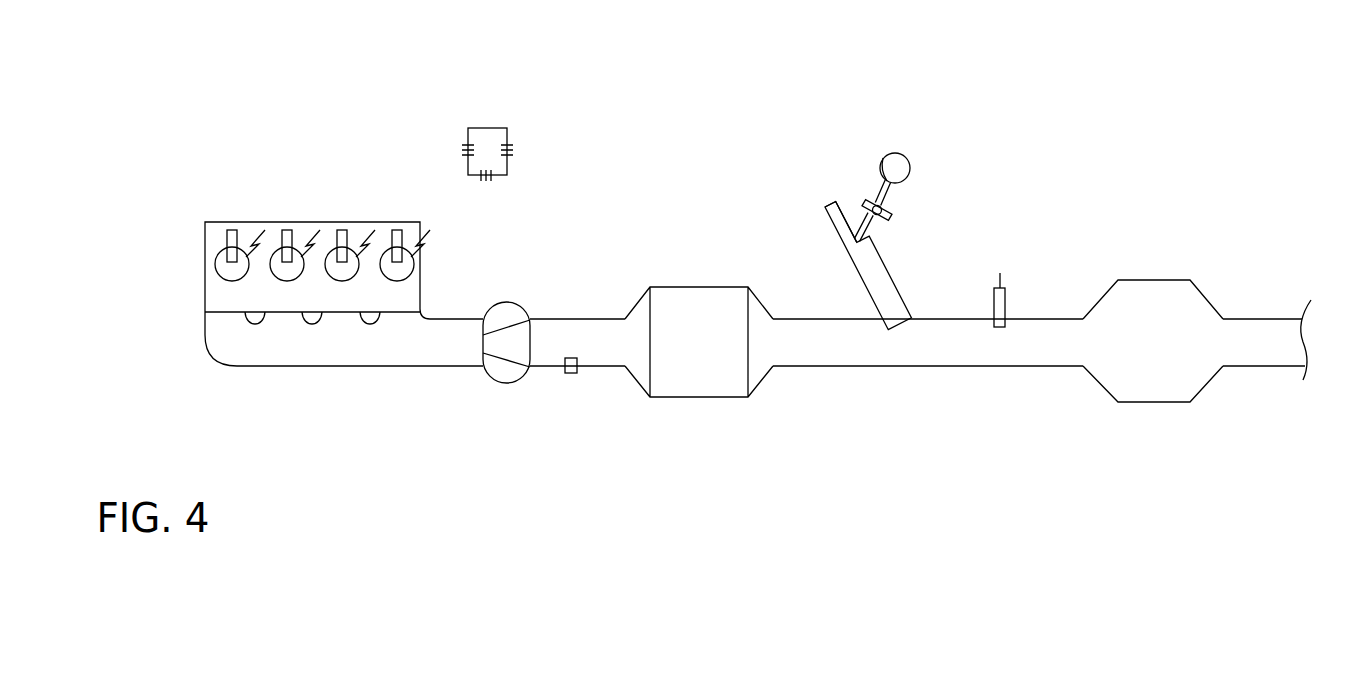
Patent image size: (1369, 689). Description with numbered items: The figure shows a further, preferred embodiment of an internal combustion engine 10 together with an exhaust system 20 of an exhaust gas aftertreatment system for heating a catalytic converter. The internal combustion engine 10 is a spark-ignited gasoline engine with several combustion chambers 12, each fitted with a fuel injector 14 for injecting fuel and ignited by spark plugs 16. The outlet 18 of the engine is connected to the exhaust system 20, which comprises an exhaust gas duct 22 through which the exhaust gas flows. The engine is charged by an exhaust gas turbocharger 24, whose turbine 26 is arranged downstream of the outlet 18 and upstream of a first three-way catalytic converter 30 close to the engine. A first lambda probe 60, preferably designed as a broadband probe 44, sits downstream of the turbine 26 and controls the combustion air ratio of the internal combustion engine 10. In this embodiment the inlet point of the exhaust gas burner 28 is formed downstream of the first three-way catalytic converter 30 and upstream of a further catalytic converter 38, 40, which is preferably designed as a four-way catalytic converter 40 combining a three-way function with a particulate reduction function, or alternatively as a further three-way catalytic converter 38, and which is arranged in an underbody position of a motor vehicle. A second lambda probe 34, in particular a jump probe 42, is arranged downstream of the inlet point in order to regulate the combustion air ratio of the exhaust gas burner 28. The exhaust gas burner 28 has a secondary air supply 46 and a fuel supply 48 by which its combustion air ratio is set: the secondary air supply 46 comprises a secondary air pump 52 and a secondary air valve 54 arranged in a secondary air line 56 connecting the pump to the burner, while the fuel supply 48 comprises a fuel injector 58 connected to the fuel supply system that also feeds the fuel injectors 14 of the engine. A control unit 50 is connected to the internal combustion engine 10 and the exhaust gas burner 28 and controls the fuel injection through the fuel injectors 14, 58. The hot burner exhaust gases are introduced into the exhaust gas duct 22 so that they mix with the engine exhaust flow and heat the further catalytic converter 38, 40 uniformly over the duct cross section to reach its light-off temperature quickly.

The internal combustion engine 10 is at (190, 193).
The combustion chamber 12 is at (225, 269).
The fuel injector 14 is at (280, 229).
The spark plug 16 is at (311, 240).
The outlet 18 is at (278, 345).
The exhaust system 20 is at (1093, 160).
The exhaust gas duct 22 is at (452, 329).
The exhaust gas turbocharger 24 is at (509, 299).
The turbine 26 is at (507, 383).
The exhaust gas burner 28 is at (878, 294).
The three-way catalytic converter 30 is at (670, 295).
The second lambda probe 34 is at (1033, 267).
The jump probe 42 is at (1001, 302).
The further three-way catalytic converter 38 is at (1153, 308).
The four-way catalytic converter 40 is at (1148, 293).
The secondary air supply 46 is at (867, 238).
The fuel supply 48 is at (790, 211).
The fuel injector 58 is at (828, 207).
The control unit 50 is at (489, 128).
The secondary air pump 52 is at (912, 165).
The secondary air valve 54 is at (877, 210).
The secondary air line 56 is at (880, 190).
The first lambda probe 60 is at (573, 394).
The broadband probe 44 is at (573, 372).